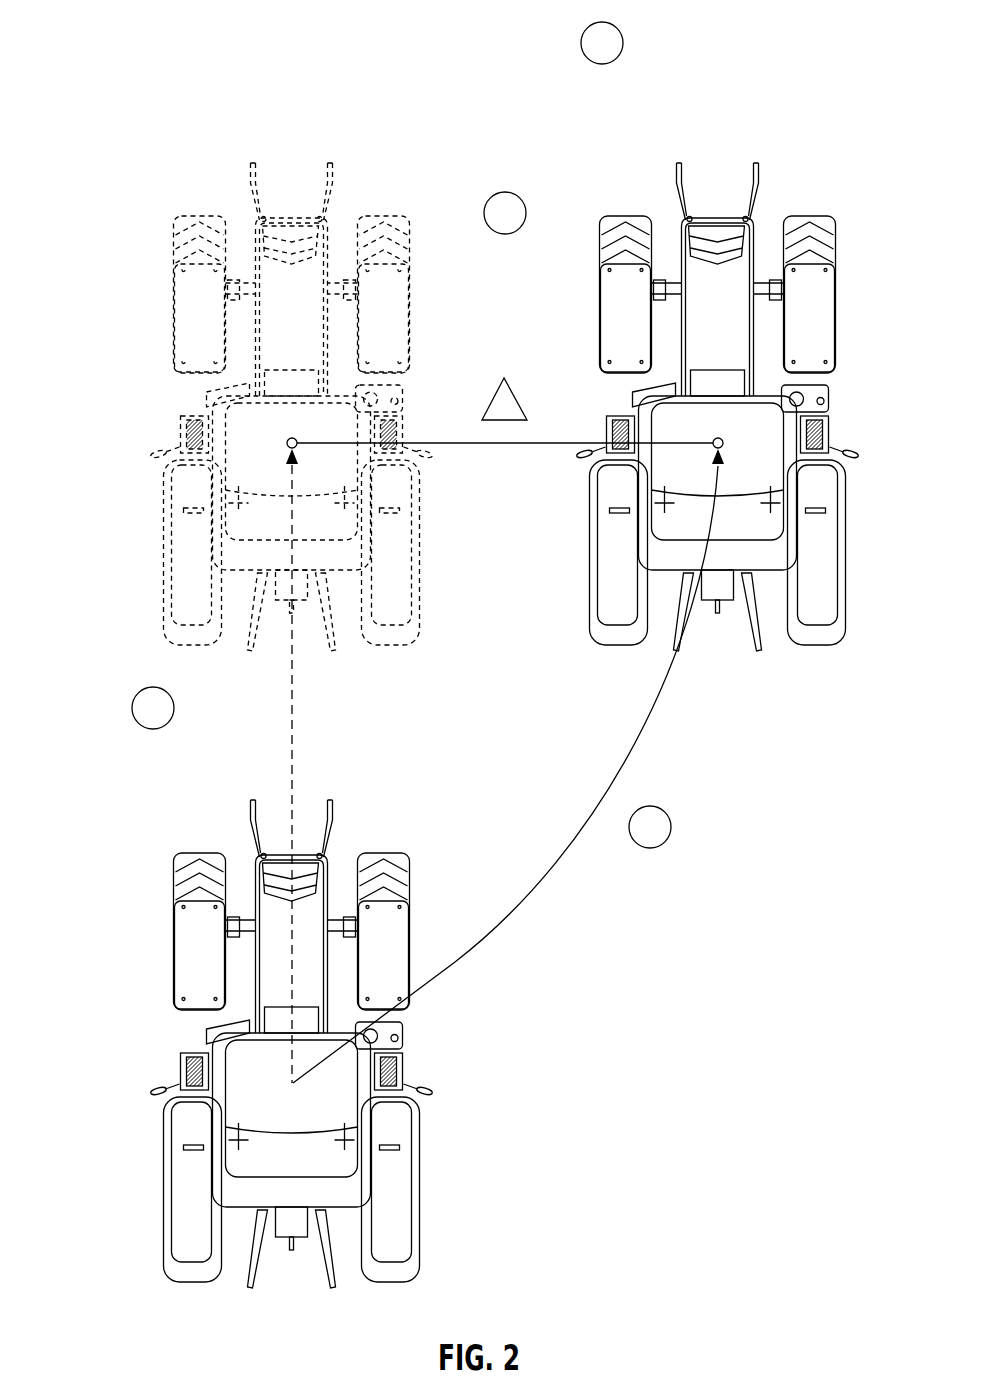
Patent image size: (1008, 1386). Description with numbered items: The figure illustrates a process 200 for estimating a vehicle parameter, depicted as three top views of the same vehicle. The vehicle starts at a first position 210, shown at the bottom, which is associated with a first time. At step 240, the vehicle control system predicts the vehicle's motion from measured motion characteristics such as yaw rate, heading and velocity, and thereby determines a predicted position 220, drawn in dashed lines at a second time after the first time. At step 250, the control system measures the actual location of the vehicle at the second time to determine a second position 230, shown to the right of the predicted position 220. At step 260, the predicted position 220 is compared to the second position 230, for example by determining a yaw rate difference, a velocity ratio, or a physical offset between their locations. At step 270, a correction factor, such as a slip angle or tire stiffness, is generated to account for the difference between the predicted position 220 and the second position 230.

The process 200 is at (172, 30).
The first position 210 is at (401, 858).
The predicted position 220 is at (185, 225).
The second position 230 is at (620, 224).
The step of predicting vehicle motion 240 is at (139, 693).
The step of measuring vehicle position 250 is at (665, 811).
The step of comparing prediction and measurement 260 is at (490, 197).
The step of generating correction factor 270 is at (588, 27).